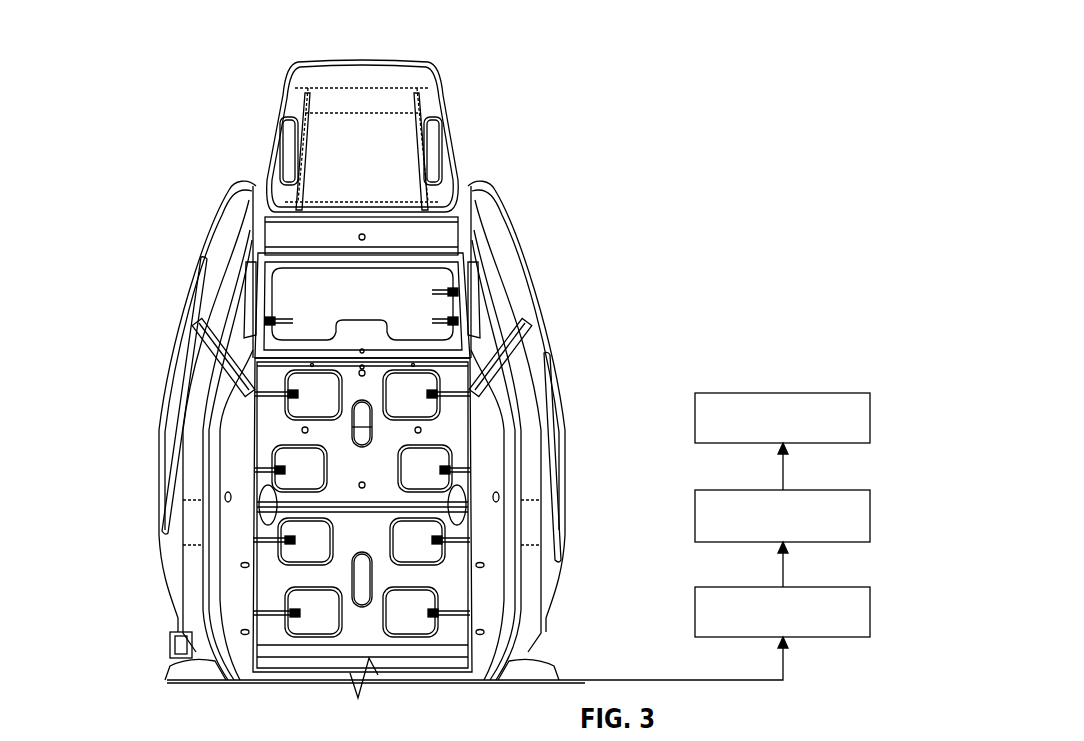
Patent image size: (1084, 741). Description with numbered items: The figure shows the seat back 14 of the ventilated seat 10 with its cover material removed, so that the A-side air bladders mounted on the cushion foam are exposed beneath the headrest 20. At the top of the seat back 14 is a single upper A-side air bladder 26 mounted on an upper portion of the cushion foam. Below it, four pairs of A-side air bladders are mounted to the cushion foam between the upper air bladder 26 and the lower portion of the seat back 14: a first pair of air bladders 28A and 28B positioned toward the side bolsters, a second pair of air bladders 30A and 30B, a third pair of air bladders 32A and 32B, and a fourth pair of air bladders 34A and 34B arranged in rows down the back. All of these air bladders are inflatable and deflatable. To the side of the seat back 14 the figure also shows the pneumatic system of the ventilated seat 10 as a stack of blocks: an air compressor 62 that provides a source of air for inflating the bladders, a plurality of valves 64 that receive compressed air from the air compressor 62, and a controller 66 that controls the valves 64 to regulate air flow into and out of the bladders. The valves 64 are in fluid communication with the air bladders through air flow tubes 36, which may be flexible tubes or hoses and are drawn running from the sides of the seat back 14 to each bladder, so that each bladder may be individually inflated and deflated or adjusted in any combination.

The ventilated seat 10 is at (263, 74).
The seat back 14 is at (221, 257).
The headrest 20 is at (360, 70).
The upper A-side air bladder 26 is at (422, 277).
The air bladder 28A is at (197, 322).
The air bladder 28B is at (527, 321).
The air bladder 30A is at (270, 481).
The air bladder 30B is at (455, 481).
The air bladder 32A is at (313, 543).
The air bladder 32B is at (468, 541).
The air bladder 34A is at (305, 627).
The air bladder 34B is at (405, 627).
The air flow tubes 36 is at (280, 322).
The air compressor 62 is at (820, 392).
The valves 64 is at (820, 488).
The controller 66 is at (820, 585).